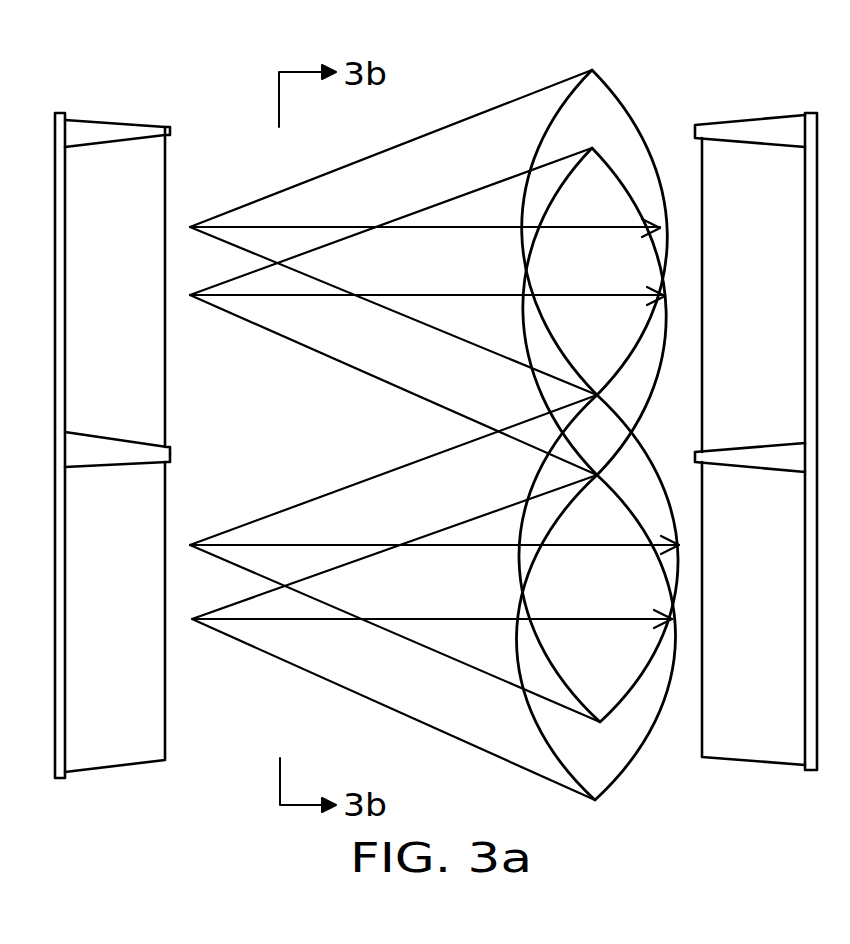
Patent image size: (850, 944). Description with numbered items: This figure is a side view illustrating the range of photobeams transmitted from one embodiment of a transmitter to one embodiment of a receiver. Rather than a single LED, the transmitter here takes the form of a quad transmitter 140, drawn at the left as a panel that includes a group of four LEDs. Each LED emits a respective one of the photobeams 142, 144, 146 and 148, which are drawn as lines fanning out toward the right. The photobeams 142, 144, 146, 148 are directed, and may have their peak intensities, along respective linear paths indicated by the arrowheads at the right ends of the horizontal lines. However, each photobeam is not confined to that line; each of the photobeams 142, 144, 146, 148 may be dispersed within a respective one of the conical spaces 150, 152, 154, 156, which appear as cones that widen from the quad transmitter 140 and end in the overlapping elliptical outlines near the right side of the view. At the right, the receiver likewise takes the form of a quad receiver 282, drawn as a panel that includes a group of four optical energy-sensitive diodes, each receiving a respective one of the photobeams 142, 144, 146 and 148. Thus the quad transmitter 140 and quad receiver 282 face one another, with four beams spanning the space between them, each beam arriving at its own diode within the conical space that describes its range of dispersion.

The quad transmitter 140 is at (135, 420).
The photobeam 142 is at (305, 227).
The photobeam 144 is at (300, 297).
The photobeam 146 is at (305, 545).
The photobeam 148 is at (305, 621).
The conical space 150 is at (483, 112).
The conical space 152 is at (356, 368).
The conical space 154 is at (386, 472).
The conical space 156 is at (340, 688).
The quad receiver 282 is at (790, 437).